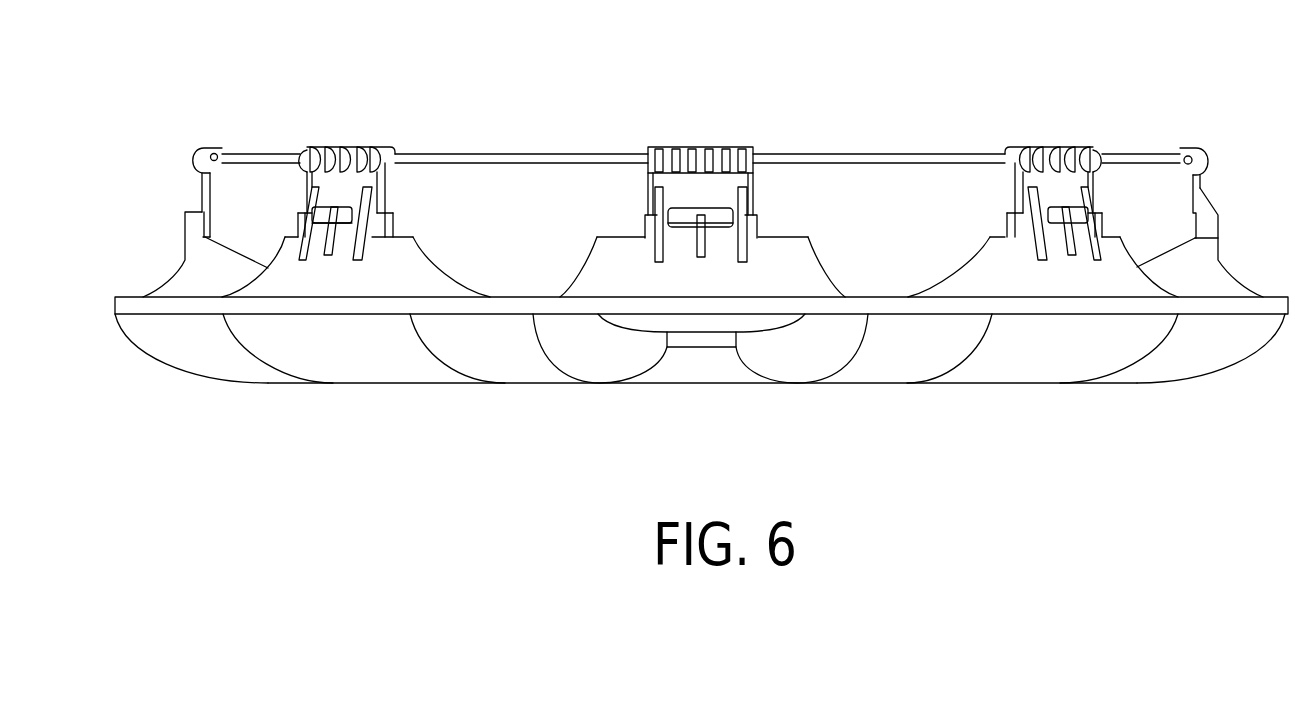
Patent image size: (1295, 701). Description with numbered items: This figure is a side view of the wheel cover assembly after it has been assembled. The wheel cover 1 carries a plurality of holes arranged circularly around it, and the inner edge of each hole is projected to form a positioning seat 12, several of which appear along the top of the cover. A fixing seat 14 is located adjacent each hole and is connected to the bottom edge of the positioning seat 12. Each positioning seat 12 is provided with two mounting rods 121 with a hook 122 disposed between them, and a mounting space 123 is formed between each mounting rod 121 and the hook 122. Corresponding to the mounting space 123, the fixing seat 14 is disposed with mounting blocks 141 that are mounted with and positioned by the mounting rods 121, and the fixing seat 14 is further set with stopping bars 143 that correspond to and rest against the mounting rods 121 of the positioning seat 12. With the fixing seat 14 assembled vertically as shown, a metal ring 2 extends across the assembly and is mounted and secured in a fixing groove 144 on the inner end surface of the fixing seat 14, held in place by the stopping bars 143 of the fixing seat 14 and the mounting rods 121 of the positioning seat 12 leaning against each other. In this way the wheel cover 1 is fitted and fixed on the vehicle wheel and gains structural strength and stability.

The wheel cover 1 is at (215, 352).
The metal ring 2 is at (215, 154).
The positioning seat 12 is at (195, 235).
The fixing seat 14 is at (640, 154).
The mounting rod 121 is at (300, 262).
The hook 122 is at (330, 258).
The mounting space 123 is at (347, 238).
The mounting block 141 is at (323, 210).
The stopping bar 143 is at (197, 205).
The fixing groove 144 is at (201, 151).